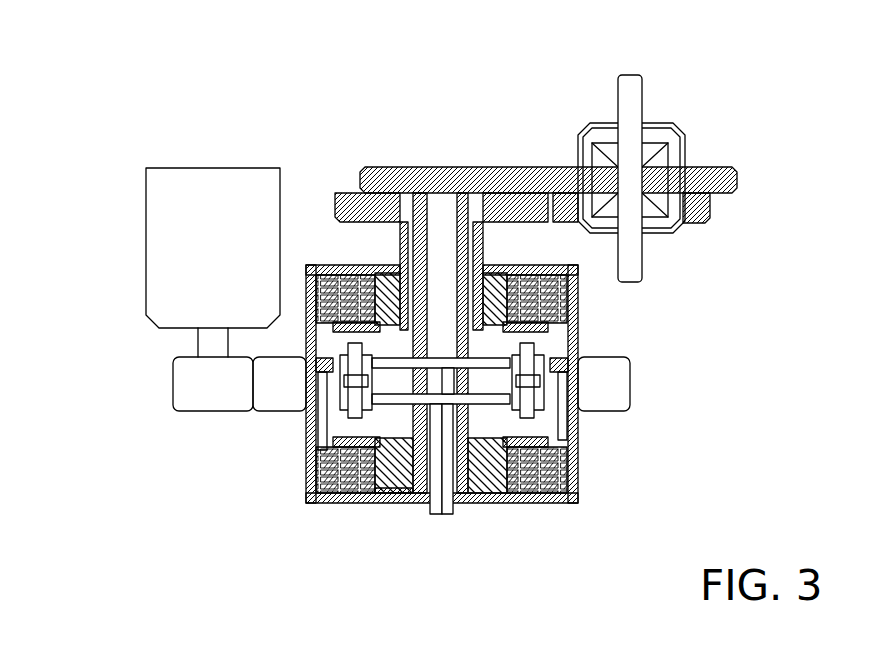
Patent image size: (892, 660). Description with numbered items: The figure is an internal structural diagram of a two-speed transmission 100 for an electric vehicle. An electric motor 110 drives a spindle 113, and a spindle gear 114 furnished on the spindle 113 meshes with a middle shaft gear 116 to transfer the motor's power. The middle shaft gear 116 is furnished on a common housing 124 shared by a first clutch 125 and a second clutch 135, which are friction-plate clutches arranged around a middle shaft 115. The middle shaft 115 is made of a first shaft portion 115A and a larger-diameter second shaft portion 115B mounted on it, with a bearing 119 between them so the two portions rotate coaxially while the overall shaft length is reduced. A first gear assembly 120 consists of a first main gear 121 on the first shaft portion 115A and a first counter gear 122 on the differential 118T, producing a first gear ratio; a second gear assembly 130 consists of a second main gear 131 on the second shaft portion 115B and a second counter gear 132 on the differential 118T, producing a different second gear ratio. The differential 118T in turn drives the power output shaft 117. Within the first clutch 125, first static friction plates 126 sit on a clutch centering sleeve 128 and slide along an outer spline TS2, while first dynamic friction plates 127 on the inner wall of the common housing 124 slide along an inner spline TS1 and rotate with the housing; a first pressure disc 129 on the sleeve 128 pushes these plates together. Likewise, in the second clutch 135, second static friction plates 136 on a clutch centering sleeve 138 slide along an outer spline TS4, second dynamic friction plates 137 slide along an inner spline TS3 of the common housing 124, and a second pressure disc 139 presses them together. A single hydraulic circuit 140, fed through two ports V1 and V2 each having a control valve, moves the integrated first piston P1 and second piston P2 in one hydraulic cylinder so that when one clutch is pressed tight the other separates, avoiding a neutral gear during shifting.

The two-speed transmission 100 is at (63, 70).
The electric motor 110 is at (172, 245).
The spindle 113 is at (210, 338).
The spindle gear 114 is at (185, 385).
The middle shaft 115 is at (355, 62).
The first shaft portion 115A is at (425, 195).
The second shaft portion 115B is at (460, 195).
The middle shaft gear 116 is at (282, 393).
The power output shaft 117 is at (632, 256).
The differential 118T is at (655, 130).
The bearing 119 is at (472, 224).
The first gear assembly 120 is at (568, 127).
The first main gear 121 is at (505, 172).
The first counter gear 122 is at (535, 172).
The common housing 124 is at (328, 503).
The first clutch 125 is at (477, 561).
The first static friction plates 126 is at (513, 503).
The first dynamic friction plates 127 is at (545, 503).
The clutch centering sleeve 128 is at (487, 503).
The first pressure disc 129 is at (578, 442).
The second gear assembly 130 is at (470, 62).
The second main gear 131 is at (476, 192).
The second counter gear 132 is at (566, 192).
The second clutch 135 is at (430, 127).
The second static friction plates 136 is at (350, 272).
The second dynamic friction plates 137 is at (320, 268).
The clutch centering sleeve 138 is at (395, 272).
The second pressure disc 139 is at (308, 300).
The hydraulic circuit 140 is at (465, 561).
The port V1 is at (430, 513).
The port V2 is at (448, 513).
The first piston P1 is at (528, 416).
The second piston P2 is at (528, 354).
The inner spline TS1 is at (320, 447).
The outer spline TS2 is at (378, 493).
The inner spline TS3 is at (310, 330).
The outer spline TS4 is at (340, 322).